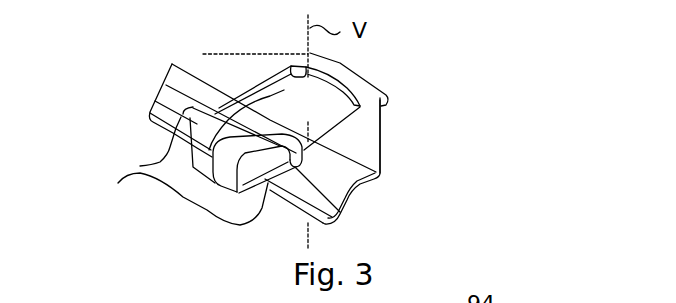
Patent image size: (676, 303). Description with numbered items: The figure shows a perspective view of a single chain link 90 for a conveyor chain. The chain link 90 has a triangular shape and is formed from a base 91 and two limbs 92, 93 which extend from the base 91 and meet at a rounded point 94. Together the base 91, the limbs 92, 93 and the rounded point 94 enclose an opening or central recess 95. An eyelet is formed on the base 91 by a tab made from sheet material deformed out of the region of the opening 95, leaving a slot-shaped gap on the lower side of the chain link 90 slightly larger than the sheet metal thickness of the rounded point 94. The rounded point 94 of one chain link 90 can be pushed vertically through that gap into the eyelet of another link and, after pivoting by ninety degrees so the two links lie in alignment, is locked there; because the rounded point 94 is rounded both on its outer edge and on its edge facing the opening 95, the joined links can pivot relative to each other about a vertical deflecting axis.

The chain link 90 is at (447, 81).
The base 91 is at (118, 183).
The limb 92 is at (203, 68).
The limb 93 is at (360, 155).
The rounded point 94 is at (350, 71).
The opening or central recess 95 is at (313, 114).